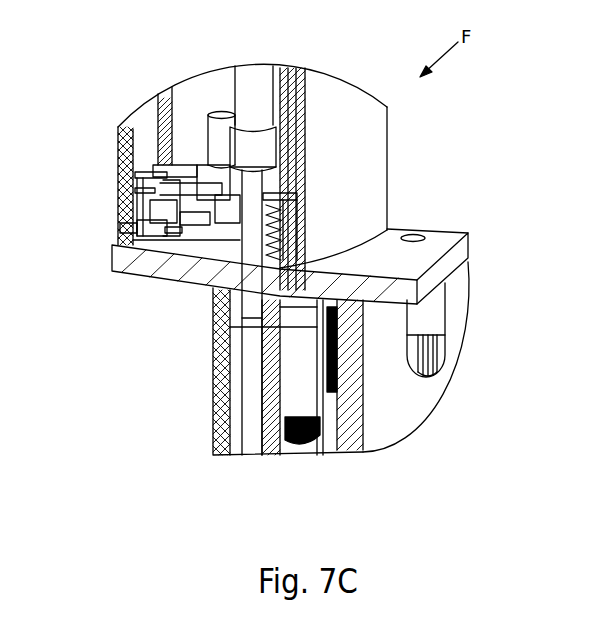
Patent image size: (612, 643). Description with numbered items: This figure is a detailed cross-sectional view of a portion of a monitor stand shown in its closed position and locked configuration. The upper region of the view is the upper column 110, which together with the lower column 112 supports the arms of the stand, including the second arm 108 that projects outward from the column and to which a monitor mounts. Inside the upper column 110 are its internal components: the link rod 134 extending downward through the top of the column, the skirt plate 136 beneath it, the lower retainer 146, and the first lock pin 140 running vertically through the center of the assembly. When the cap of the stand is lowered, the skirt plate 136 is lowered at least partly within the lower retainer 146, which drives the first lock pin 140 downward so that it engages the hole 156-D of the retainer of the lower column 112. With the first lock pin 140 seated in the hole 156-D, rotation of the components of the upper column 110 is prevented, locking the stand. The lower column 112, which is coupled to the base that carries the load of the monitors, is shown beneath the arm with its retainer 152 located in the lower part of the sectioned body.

The link rod 134 is at (240, 93).
The skirt plate 136 is at (120, 172).
The upper column 110 is at (363, 117).
The second arm 108 is at (440, 248).
The lower retainer 146 is at (193, 237).
The first lock pin 140 is at (250, 293).
The lower column 112 is at (393, 405).
The hole 156-D is at (253, 318).
The retainer 152 is at (300, 445).